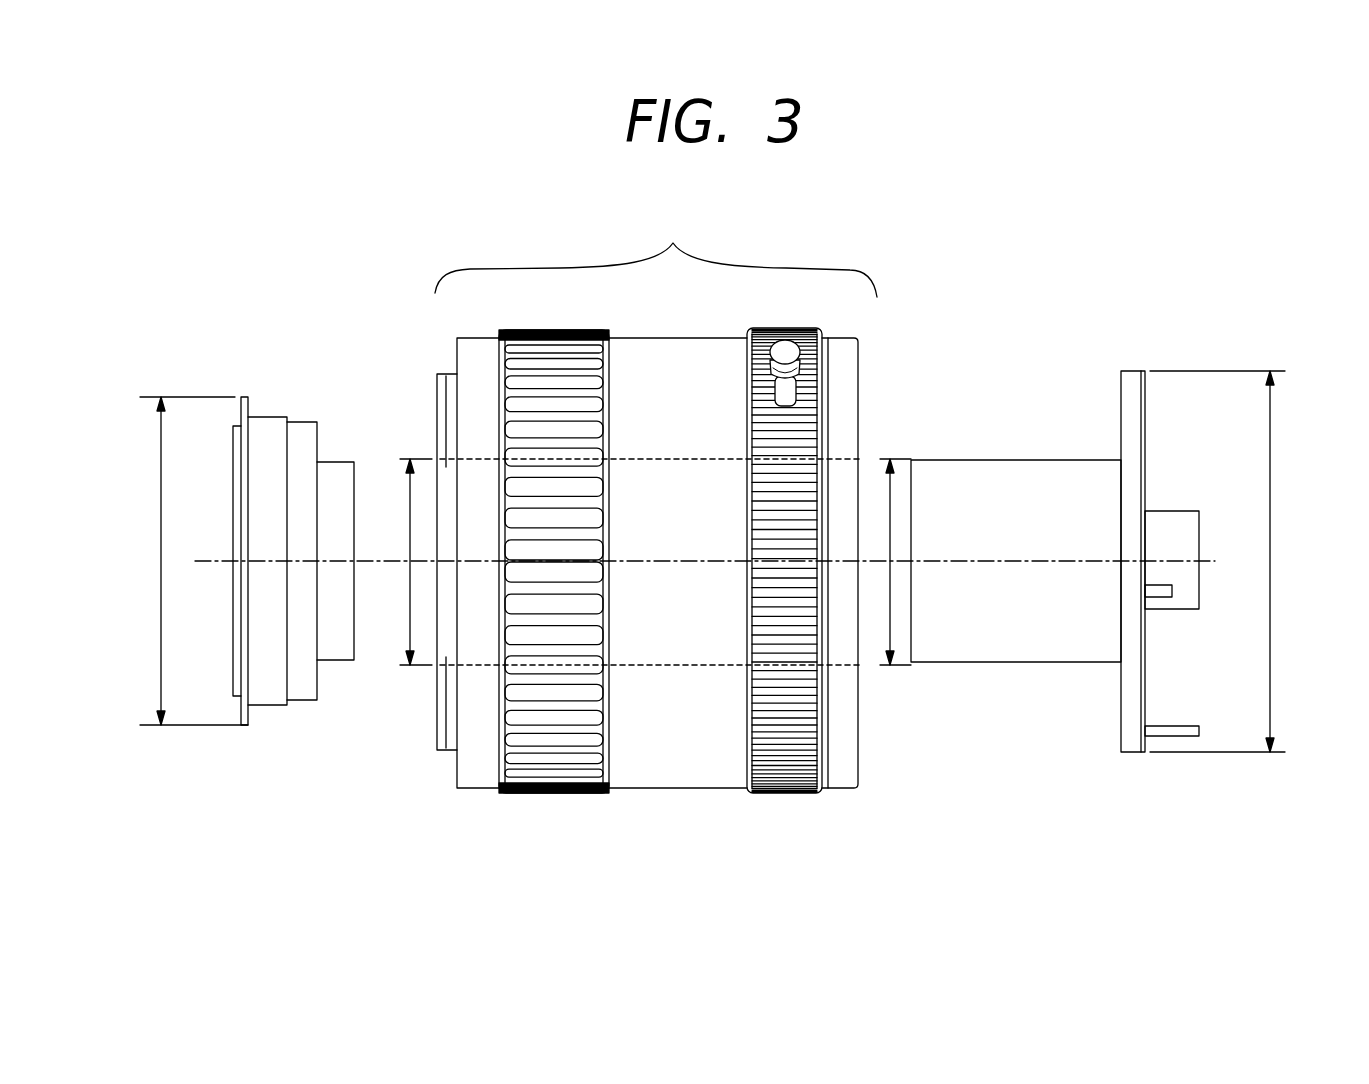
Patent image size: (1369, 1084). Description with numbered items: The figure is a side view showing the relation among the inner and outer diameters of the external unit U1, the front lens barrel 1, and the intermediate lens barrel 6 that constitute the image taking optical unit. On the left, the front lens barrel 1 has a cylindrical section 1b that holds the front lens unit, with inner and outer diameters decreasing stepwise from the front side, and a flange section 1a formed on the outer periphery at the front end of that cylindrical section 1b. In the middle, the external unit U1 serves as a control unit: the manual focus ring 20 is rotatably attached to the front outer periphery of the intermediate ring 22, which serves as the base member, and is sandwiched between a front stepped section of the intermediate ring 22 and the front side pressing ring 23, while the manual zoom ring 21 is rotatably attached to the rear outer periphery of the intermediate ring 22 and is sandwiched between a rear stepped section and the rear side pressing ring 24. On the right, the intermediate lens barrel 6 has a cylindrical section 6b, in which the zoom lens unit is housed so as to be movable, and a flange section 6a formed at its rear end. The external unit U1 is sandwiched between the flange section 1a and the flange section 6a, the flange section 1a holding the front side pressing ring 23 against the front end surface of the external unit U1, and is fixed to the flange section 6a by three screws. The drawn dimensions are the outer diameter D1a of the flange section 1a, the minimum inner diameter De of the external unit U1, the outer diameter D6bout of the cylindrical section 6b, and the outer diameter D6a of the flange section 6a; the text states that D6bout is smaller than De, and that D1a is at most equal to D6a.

The external unit U1 is at (656, 252).
The front lens barrel 1 is at (266, 514).
The flange section 1a is at (241, 406).
The cylindrical section 1b is at (269, 424).
The intermediate lens barrel 6 is at (1055, 577).
The flange section 6a is at (1136, 753).
The cylindrical section 6b is at (1040, 655).
The manual focus ring 20 is at (560, 791).
The manual zoom ring 21 is at (795, 785).
The intermediate ring 22 is at (672, 772).
The front side pressing ring 23 is at (472, 774).
The rear side pressing ring 24 is at (848, 772).
The inner diameter of the external unit De is at (410, 612).
The outer diameter of the flange section of the front lens barrel D1a is at (159, 556).
The outer diameter of the flange section of the intermediate lens barrel D6a is at (1272, 561).
The outer diameter of the cylindrical section of the intermediate lens barrel D6bout is at (890, 618).